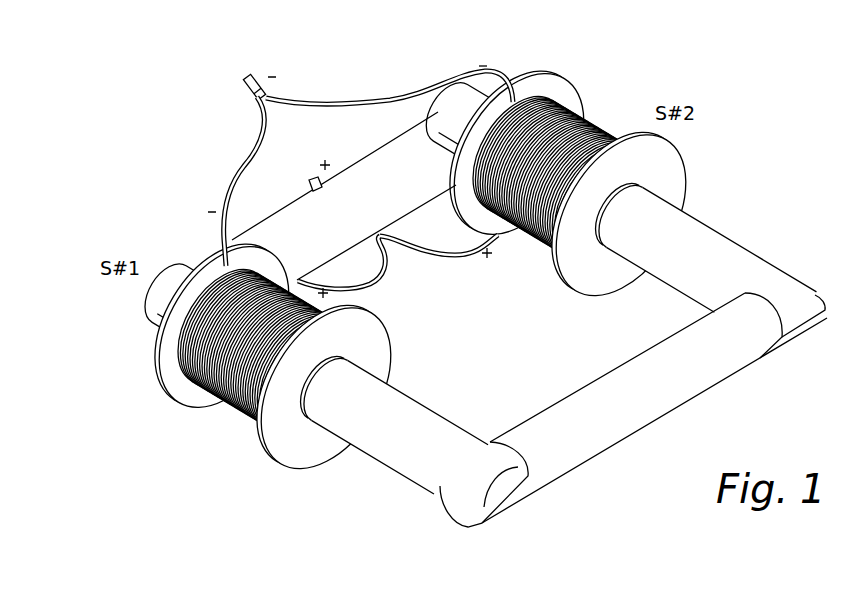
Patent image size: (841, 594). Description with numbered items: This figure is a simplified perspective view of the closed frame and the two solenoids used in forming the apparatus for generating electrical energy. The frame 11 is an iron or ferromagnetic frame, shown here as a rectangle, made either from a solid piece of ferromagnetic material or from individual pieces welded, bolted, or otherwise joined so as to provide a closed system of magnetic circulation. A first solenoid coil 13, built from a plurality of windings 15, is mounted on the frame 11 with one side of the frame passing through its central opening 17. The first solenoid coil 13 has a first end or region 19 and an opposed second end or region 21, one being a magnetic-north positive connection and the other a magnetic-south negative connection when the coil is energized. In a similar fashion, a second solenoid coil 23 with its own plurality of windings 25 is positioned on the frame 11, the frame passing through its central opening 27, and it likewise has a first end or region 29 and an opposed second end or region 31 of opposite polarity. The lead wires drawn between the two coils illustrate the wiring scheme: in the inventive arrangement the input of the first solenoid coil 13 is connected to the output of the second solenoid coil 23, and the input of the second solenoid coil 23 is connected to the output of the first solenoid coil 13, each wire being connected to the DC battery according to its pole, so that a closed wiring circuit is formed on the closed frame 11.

The frame 11 is at (781, 222).
The first solenoid coil 13 is at (312, 367).
The windings 15 is at (190, 370).
The central opening 17 is at (312, 409).
The first end or region 19 is at (230, 270).
The second end or region 21 is at (298, 280).
The second solenoid coil 23 is at (609, 187).
The windings 25 is at (596, 120).
The central opening 27 is at (650, 203).
The first end or region 29 is at (492, 233).
The second end or region 31 is at (513, 98).